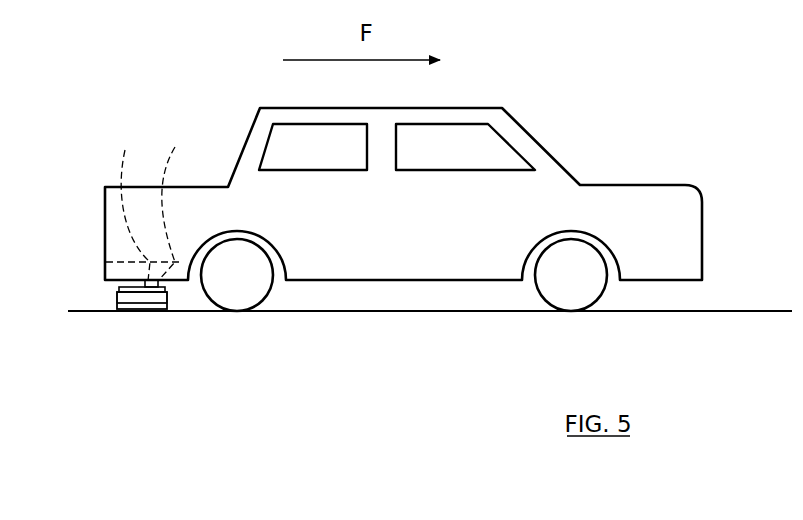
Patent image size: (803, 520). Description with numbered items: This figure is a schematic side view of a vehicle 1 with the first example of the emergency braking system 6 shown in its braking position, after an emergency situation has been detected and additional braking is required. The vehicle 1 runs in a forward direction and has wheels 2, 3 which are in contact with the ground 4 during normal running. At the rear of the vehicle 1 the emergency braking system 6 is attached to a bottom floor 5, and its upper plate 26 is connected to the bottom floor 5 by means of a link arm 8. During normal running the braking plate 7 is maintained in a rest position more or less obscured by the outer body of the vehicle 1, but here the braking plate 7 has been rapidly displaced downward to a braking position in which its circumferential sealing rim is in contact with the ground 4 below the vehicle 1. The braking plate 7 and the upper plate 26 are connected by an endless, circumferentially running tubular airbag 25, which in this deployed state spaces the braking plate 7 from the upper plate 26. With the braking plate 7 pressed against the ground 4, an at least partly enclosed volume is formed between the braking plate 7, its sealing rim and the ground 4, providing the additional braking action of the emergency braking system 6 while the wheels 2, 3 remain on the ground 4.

The vehicle 1 is at (563, 120).
The wheel 2 is at (235, 297).
The wheel 3 is at (572, 293).
The ground 4 is at (358, 313).
The bottom floor 5 is at (172, 199).
The emergency braking system 6 is at (120, 248).
The braking plate 7 is at (138, 310).
The link arm 8 is at (133, 200).
The tubular airbag 25 is at (132, 297).
The upper plate 26 is at (117, 289).